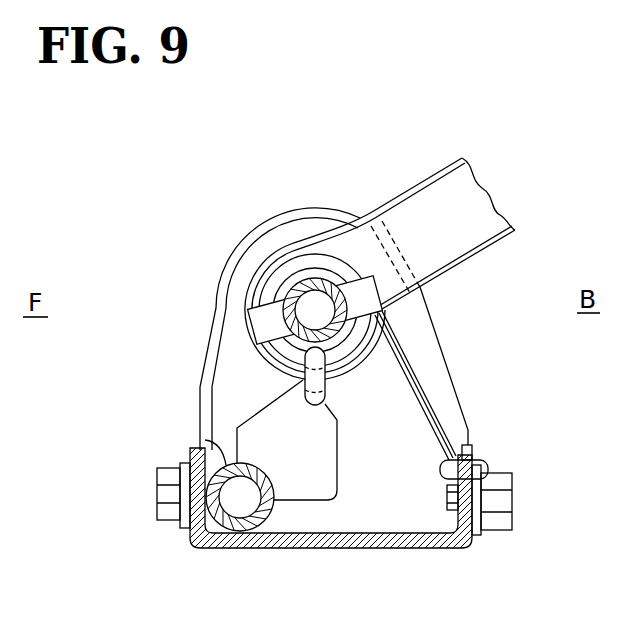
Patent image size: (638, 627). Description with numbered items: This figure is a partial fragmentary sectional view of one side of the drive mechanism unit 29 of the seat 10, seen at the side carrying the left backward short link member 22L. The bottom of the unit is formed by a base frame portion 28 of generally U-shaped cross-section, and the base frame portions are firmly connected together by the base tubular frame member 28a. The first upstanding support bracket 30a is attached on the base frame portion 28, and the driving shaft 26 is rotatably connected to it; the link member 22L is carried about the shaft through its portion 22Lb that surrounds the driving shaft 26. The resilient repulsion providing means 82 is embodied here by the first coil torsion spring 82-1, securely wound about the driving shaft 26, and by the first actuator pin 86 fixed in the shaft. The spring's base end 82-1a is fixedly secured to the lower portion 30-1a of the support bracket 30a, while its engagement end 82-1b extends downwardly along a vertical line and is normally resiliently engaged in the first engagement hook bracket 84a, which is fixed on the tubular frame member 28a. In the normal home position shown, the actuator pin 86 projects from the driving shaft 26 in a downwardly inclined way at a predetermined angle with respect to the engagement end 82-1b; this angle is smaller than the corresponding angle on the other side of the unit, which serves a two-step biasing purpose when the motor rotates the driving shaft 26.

The seat 10 is at (122, 172).
The backward short link member 22L is at (420, 186).
The boss portion of pedal arm 22Lb is at (292, 243).
The driving shaft 26 is at (375, 247).
The base frame portion 28 is at (303, 548).
The base tubular frame member 28a is at (200, 445).
The drive mechanism unit 29 is at (182, 390).
The first upstanding support bracket 30a is at (445, 360).
The bent tab of lever 30-1a is at (470, 447).
The resilient repulsion providing means 82 is at (280, 278).
The first coil torsion spring 82-1 is at (315, 310).
The base end 82-1a is at (425, 393).
The engagement end 82-1b is at (325, 398).
The first engagement hook bracket 84a is at (323, 458).
The actuator pin 86 is at (262, 317).